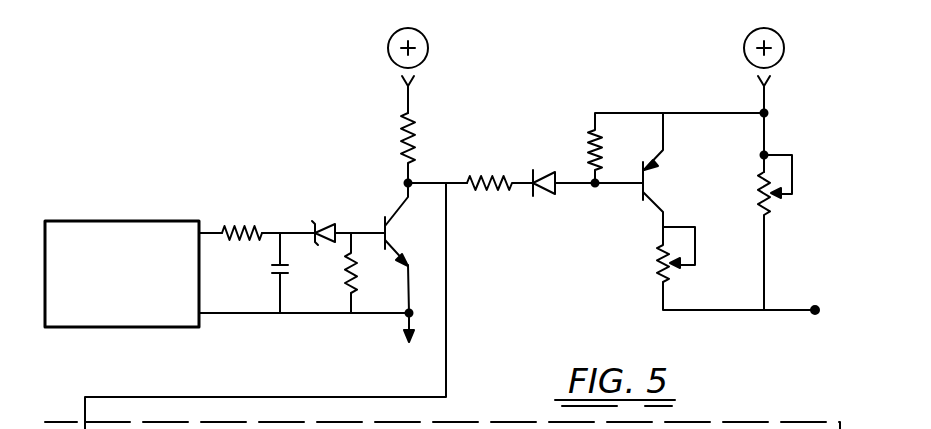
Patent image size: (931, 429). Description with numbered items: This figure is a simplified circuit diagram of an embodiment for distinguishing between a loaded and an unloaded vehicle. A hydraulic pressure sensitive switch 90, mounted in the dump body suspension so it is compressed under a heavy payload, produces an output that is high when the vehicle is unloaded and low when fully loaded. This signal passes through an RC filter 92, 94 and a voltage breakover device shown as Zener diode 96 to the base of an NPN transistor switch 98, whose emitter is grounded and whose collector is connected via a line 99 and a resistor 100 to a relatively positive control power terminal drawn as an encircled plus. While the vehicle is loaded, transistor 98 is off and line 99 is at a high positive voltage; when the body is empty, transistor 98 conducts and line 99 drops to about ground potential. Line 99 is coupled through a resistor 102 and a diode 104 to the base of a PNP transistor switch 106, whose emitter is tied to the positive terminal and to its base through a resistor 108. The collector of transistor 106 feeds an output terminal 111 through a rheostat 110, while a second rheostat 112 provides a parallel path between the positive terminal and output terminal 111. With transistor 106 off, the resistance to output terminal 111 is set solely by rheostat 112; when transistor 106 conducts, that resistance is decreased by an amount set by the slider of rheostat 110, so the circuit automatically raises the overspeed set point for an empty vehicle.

The hydraulic pressure sensitive switch 90 is at (140, 220).
The RC filter resistor 92 is at (250, 222).
The RC filter capacitor 94 is at (271, 270).
The Zener diode 96 is at (330, 218).
The NPN transistor switch 98 is at (386, 218).
The line 99 is at (405, 172).
The resistor 100 is at (401, 135).
The resistor 102 is at (495, 178).
The diode 104 is at (542, 196).
The PNP transistor switch 106 is at (652, 186).
The resistor 108 is at (590, 143).
The rheostat 110 is at (656, 263).
The output terminal 111 is at (818, 307).
The second rheostat 112 is at (753, 183).